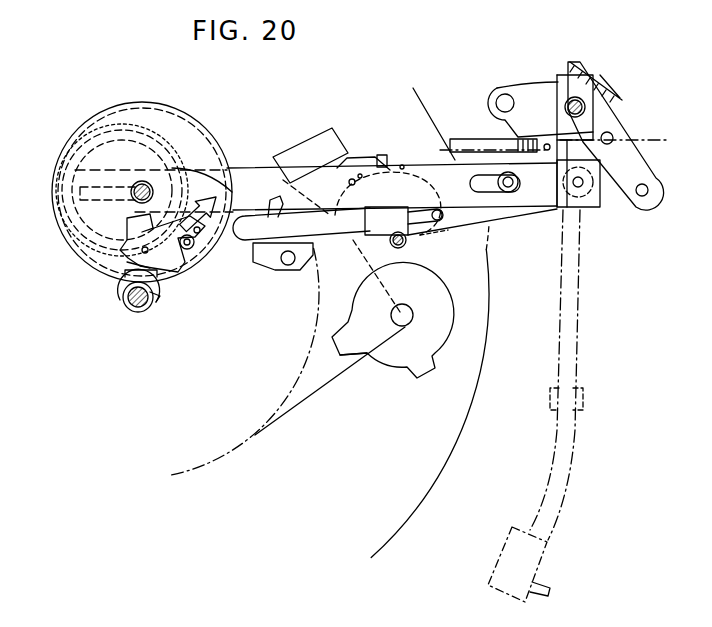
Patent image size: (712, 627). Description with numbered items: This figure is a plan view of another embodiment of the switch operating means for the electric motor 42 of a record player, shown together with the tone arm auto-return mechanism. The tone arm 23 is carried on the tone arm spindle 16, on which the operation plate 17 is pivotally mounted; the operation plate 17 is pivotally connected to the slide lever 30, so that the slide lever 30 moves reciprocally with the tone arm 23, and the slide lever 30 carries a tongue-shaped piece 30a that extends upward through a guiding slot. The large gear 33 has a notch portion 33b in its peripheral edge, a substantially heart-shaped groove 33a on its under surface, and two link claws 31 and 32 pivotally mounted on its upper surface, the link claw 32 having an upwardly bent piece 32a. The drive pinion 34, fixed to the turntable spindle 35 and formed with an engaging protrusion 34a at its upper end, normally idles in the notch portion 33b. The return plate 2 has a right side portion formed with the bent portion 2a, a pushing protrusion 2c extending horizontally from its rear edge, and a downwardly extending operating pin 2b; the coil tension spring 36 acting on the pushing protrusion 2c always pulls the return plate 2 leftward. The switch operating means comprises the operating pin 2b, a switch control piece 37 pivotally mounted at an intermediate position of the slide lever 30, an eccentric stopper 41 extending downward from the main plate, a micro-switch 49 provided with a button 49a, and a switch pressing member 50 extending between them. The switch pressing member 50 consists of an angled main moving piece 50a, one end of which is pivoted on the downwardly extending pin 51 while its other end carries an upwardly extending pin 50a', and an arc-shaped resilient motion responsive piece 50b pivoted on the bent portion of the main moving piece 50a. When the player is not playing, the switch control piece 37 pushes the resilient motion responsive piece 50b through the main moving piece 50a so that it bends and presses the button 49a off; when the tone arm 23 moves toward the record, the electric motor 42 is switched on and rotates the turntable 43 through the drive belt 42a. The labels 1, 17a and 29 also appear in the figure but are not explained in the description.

The pivot shaft 1 is at (587, 200).
The return plate 2 is at (257, 173).
The bent portion 2a is at (557, 205).
The operating pin 2b is at (420, 178).
The pushing protrusion 2c is at (550, 147).
The tone arm spindle 16 is at (568, 100).
The operation plate 17 is at (628, 168).
The lever arm axis 17a is at (630, 144).
The tone arm 23 is at (572, 308).
The rod coupling 29 is at (578, 395).
The slide lever 30 is at (330, 228).
The tongue-shaped piece 30a is at (283, 200).
The link claw 31 is at (207, 222).
The link claw 32 is at (177, 250).
The upwardly bent piece 32a is at (130, 262).
The large gear 33 is at (258, 163).
The heart-shaped groove 33a is at (94, 153).
The notch portion 33b is at (158, 282).
The drive pinion 34 is at (120, 306).
The engaging protrusion 34a is at (158, 302).
The turntable spindle 35 is at (135, 311).
The coil tension spring 36 is at (462, 146).
The switch control piece 37 is at (423, 223).
The eccentric stopper 41 is at (392, 241).
The electric motor 42 is at (445, 312).
The drive belt 42a is at (365, 365).
The turntable 43 is at (435, 468).
The micro-switch 49 is at (298, 150).
The button 49a is at (342, 157).
The switch pressing member 50 is at (381, 152).
The main moving piece 50a is at (366, 190).
The pin 50a' is at (461, 230).
The resilient motion responsive piece 50b is at (402, 167).
The pin 51 is at (350, 184).